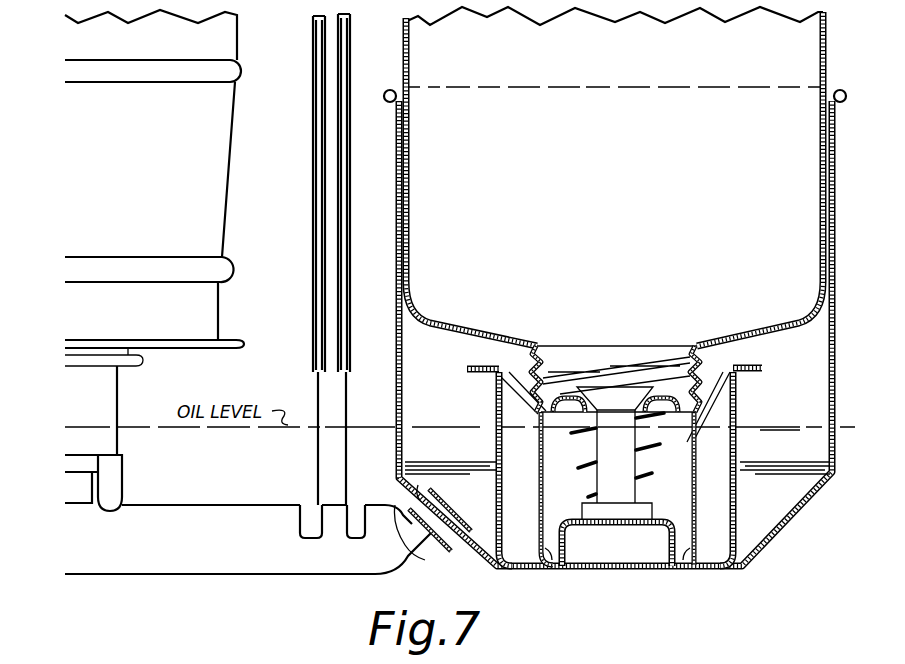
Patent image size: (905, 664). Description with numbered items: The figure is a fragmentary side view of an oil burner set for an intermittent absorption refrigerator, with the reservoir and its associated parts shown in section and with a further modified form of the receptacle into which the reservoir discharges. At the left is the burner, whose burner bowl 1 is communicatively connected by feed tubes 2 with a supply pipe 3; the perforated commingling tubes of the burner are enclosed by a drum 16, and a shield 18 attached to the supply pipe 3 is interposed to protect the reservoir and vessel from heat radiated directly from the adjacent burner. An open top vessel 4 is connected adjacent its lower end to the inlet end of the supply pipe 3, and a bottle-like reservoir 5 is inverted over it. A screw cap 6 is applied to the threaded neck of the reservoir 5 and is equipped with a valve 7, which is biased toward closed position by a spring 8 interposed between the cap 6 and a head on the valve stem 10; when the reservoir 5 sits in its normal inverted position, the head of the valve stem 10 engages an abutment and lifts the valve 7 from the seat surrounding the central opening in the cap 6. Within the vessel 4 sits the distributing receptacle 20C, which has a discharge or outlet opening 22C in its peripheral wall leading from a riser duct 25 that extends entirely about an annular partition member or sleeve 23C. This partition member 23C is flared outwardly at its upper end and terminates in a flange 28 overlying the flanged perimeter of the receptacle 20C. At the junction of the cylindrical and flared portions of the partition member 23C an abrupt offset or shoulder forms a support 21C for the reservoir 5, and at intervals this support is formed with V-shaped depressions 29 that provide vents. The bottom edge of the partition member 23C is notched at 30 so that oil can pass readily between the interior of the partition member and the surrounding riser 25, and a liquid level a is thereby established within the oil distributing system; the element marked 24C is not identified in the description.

The burner bowl 1 is at (112, 393).
The feed tubes 2 is at (122, 477).
The supply pipe 3 is at (248, 539).
The open top vessel 4 is at (410, 336).
The reservoir 5 is at (614, 143).
The screw cap 6 is at (717, 365).
The valve 7 is at (612, 400).
The spring 8 is at (585, 460).
The valve stem 10 is at (617, 466).
The drum 16 is at (218, 177).
The shield 18 is at (174, 264).
The distributing receptacle 20C is at (738, 412).
The support 21C is at (488, 362).
The discharge opening 22C is at (496, 424).
The partition member 23C is at (692, 468).
The base 24C is at (637, 528).
The riser duct 25 is at (512, 490).
The flange 28 is at (755, 364).
The V-shaped depressions 29 is at (675, 426).
The notches 30 is at (696, 555).
The liquid level a is at (808, 425).